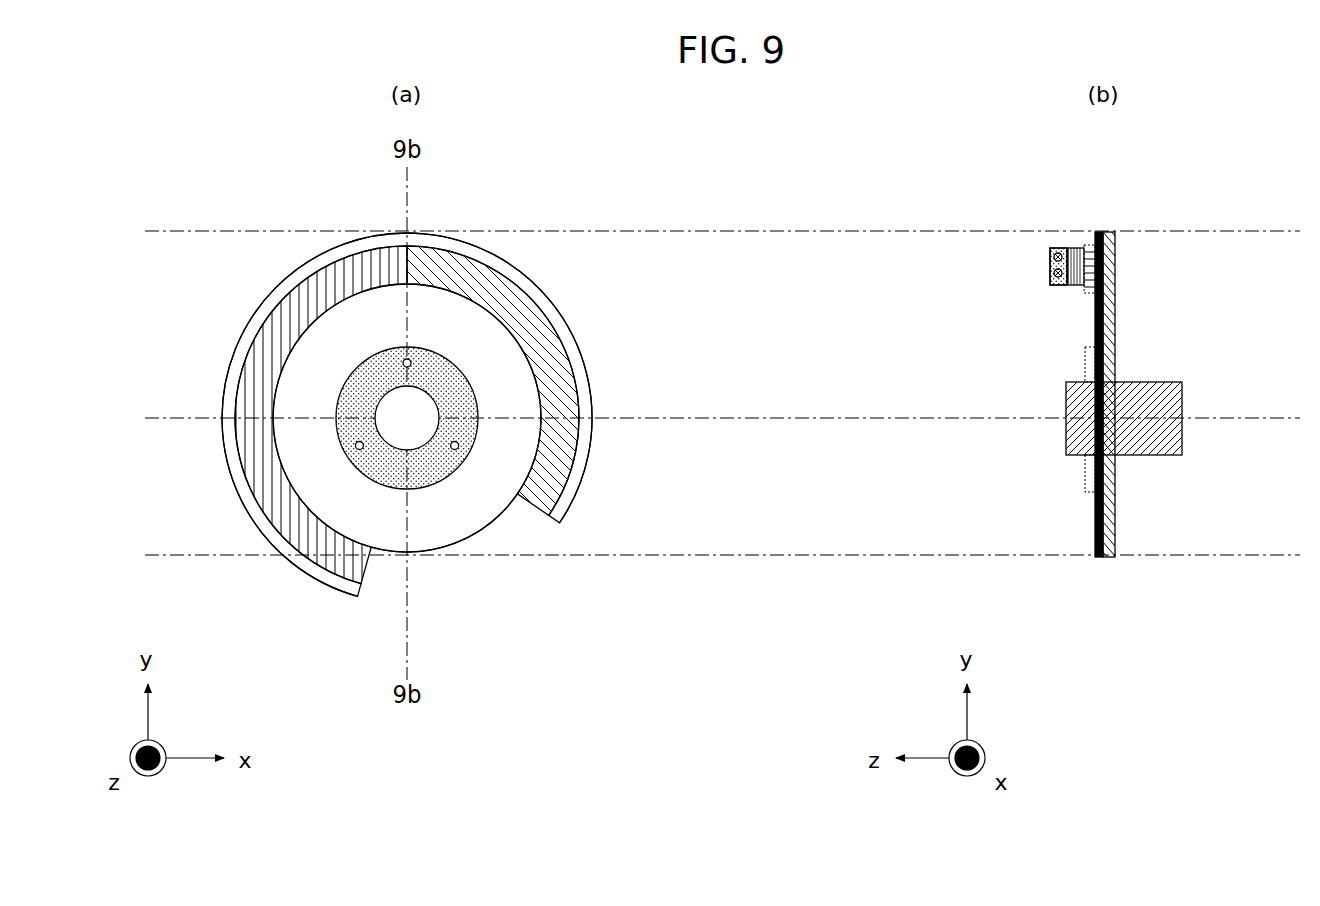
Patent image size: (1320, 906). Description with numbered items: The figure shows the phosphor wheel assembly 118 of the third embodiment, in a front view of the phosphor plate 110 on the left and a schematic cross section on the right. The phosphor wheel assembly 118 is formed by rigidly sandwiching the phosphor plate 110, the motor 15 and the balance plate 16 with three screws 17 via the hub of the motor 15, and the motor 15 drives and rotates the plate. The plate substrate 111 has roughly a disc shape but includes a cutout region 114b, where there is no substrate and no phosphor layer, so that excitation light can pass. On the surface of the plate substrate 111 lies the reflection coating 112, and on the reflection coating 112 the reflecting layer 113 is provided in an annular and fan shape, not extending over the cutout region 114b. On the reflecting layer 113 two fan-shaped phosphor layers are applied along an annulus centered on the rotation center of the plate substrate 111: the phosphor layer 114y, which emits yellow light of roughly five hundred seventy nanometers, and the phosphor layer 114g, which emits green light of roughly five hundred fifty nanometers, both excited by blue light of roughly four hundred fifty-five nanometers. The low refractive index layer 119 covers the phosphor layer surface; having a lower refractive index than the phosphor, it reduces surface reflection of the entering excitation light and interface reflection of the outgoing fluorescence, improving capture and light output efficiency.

The phosphor plate 110 is at (317, 583).
The plate substrate 111 is at (302, 262).
The reflection coating 112 is at (1098, 230).
The reflecting layer 113 is at (1088, 245).
The phosphor layer 114y is at (265, 358).
The phosphor layer 114g is at (440, 264).
The cutout region 114b is at (447, 568).
The phosphor wheel assembly 118 is at (340, 158).
The low refractive index layer 119 is at (1062, 285).
The motor 15 is at (423, 402).
The balance plate 16 is at (350, 427).
The screws 17 is at (411, 363).